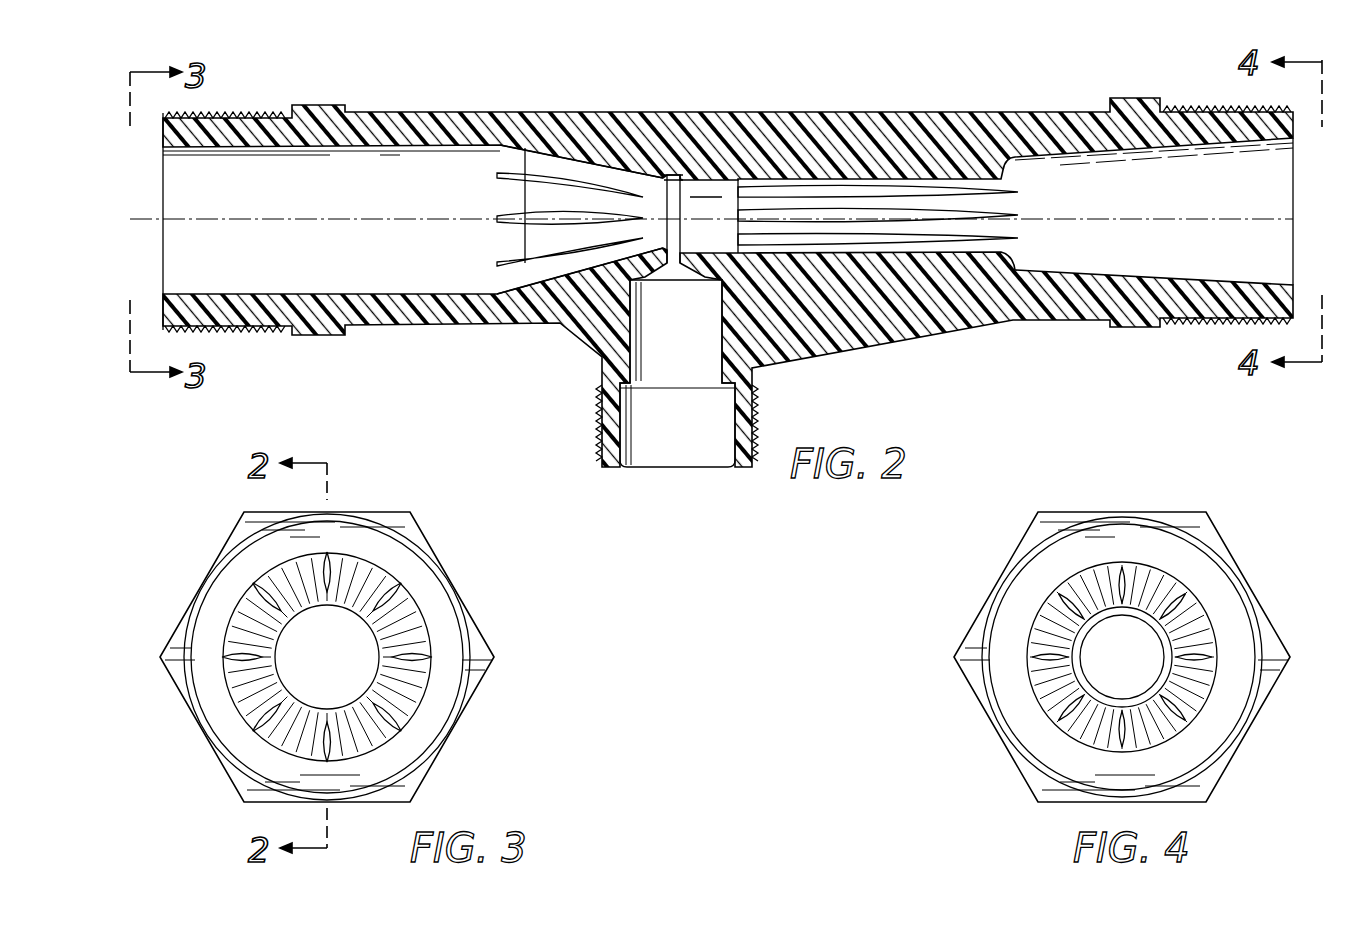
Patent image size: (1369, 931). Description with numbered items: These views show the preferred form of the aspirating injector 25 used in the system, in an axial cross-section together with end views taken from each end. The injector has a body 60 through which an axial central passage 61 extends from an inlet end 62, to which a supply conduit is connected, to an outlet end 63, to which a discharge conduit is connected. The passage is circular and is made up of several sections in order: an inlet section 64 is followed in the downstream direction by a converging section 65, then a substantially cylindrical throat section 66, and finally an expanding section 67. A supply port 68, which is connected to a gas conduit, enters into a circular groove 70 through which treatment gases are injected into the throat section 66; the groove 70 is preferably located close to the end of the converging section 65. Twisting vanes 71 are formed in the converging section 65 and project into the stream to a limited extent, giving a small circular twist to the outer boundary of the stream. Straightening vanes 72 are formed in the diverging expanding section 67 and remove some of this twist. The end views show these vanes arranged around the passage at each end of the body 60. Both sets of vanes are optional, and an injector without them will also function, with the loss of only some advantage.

In FIG. 2, the injector 25 is at (541, 104).
In FIG. 3, the injector 25 is at (184, 716).
In FIG. 4, the injector 25 is at (976, 732).
In FIG. 2, the body 60 is at (390, 118).
In FIG. 3, the body 60 is at (462, 700).
In FIG. 2, the axial central passage 61 is at (424, 184).
In FIG. 3, the axial central passage 61 is at (358, 640).
In FIG. 4, the axial central passage 61 is at (1145, 648).
In FIG. 2, the inlet end 62 is at (163, 240).
In FIG. 2, the outlet end 63 is at (1285, 218).
In FIG. 2, the inlet section 64 is at (343, 202).
In FIG. 2, the converging section 65 is at (545, 268).
In FIG. 2, the throat section 66 is at (698, 185).
In FIG. 2, the expanding section 67 is at (1070, 158).
In FIG. 2, the supply port 68 is at (697, 455).
In FIG. 2, the circular groove 70 is at (678, 176).
In FIG. 2, the twisting vanes 71 is at (483, 219).
In FIG. 3, the twisting vanes 71 is at (332, 578).
In FIG. 2, the straightening vanes 72 is at (942, 195).
In FIG. 4, the straightening vanes 72 is at (1123, 600).